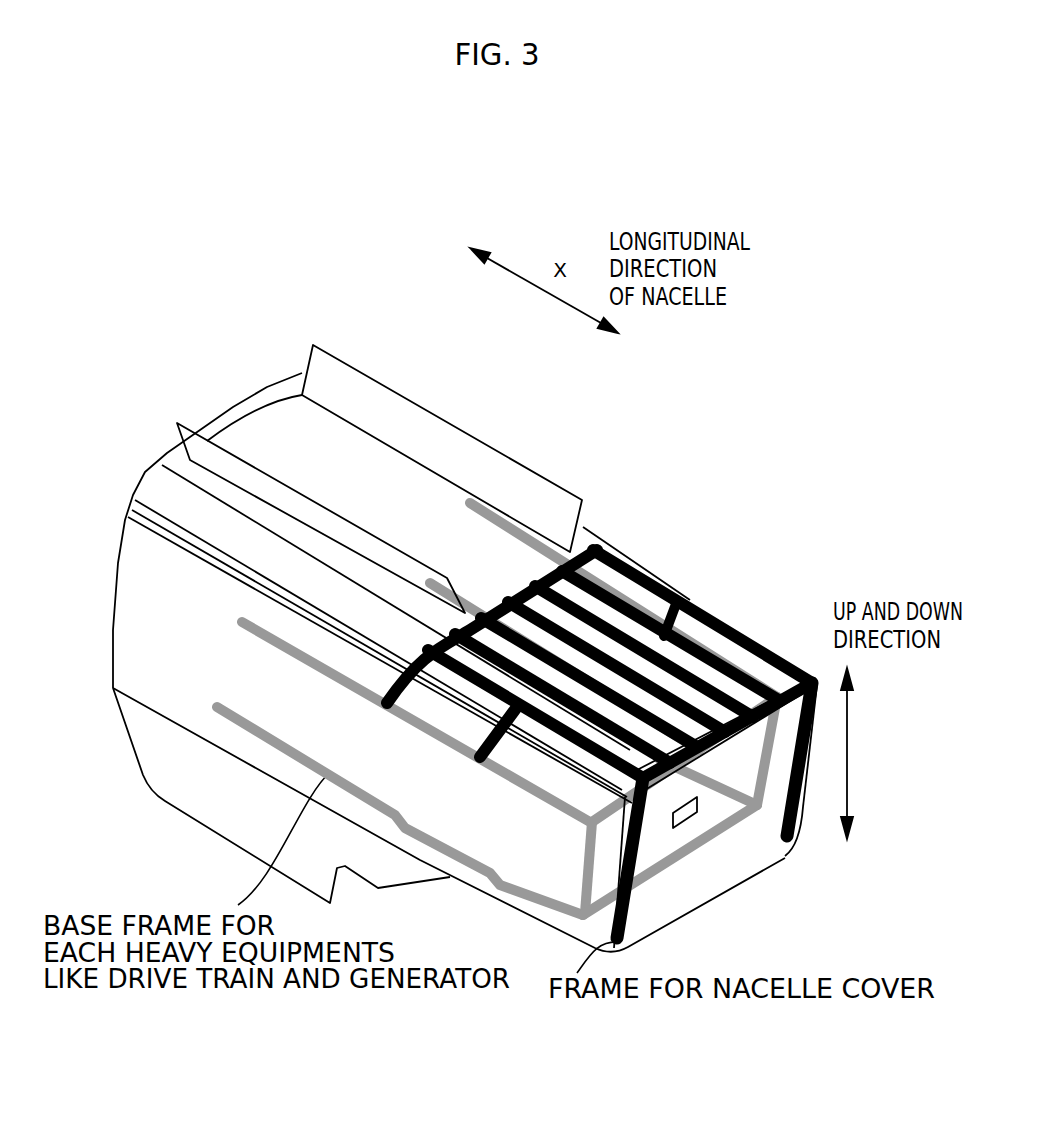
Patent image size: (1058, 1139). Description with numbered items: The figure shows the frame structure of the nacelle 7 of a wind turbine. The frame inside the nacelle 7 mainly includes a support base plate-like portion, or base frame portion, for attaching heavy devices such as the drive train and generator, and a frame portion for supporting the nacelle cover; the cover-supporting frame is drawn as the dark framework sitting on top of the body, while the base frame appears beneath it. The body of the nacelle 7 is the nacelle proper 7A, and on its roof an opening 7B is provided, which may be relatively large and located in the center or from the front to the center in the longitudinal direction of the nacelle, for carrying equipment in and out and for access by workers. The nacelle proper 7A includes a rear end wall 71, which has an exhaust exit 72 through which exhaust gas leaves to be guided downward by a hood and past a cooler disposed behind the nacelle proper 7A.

The nacelle 7 is at (802, 542).
The rear end wall 71 is at (650, 895).
The exhaust exit 72 is at (683, 818).
The nacelle proper 7A is at (143, 692).
The opening 7B is at (340, 440).